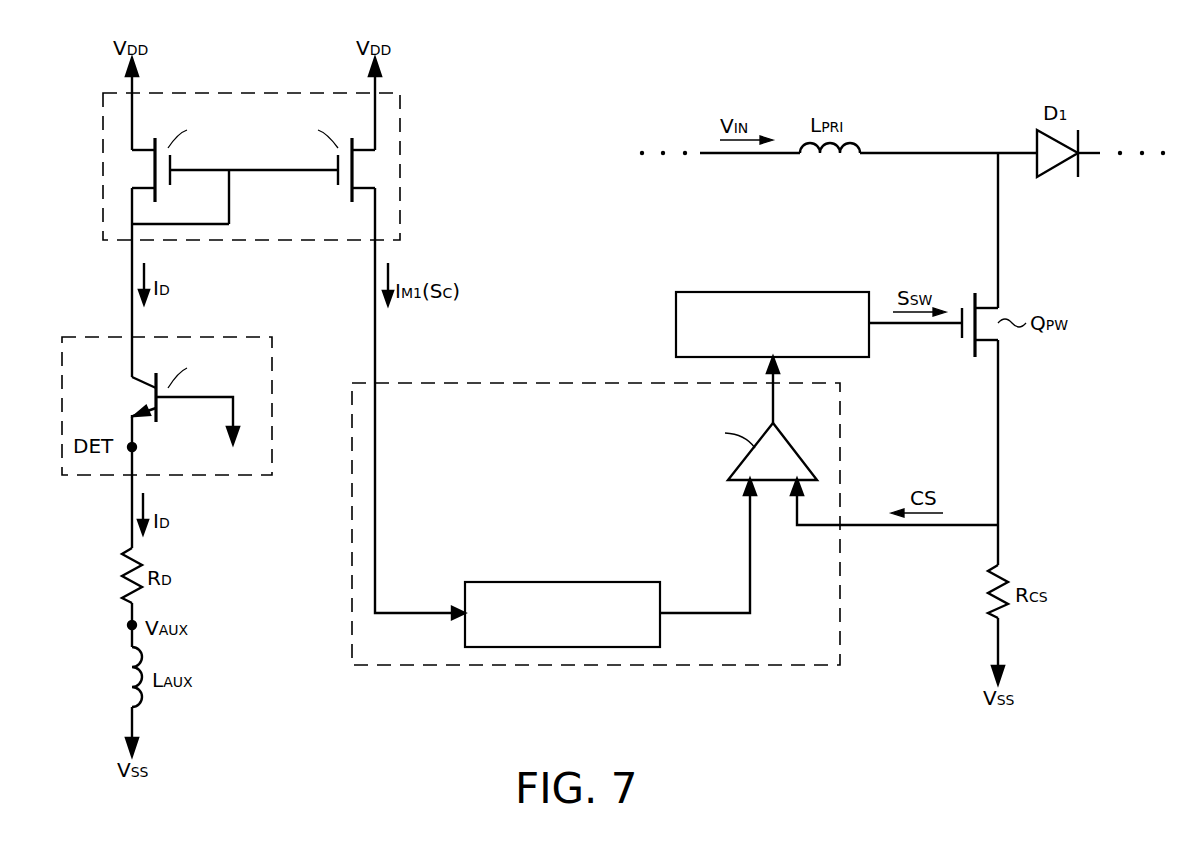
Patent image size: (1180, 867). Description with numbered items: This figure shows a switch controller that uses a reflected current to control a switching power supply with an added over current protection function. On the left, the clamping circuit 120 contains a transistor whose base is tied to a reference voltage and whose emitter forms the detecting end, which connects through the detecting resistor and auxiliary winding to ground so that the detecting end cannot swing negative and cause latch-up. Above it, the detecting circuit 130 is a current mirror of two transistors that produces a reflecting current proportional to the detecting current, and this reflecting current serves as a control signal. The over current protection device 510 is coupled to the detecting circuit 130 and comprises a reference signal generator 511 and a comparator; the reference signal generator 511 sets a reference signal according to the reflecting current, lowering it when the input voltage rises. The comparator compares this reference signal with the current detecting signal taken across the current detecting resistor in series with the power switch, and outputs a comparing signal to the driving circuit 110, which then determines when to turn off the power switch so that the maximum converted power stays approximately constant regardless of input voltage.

The driving circuit 110 is at (788, 292).
The clamping circuit 120 is at (105, 337).
The detecting circuit 130 is at (233, 93).
The over current protection device 510 is at (675, 497).
The reference signal generator 511 is at (577, 582).